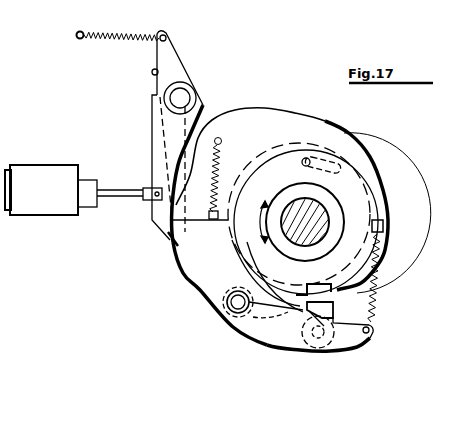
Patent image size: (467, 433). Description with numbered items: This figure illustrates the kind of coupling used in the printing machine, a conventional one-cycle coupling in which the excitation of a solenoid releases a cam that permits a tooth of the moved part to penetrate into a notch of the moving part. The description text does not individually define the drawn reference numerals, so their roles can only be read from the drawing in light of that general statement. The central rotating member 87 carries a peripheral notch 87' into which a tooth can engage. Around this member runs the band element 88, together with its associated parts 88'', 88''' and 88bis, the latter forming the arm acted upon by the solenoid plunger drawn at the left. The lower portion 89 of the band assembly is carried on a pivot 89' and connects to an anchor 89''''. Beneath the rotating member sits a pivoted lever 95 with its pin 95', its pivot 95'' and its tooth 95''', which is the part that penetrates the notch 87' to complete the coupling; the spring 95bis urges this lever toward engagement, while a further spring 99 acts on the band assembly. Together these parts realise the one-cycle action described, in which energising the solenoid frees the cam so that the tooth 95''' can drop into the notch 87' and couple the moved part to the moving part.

The toothed disc 87 is at (311, 217).
The notch of disc 87' is at (317, 277).
The brake band 88 is at (303, 188).
The band end link 88'' is at (181, 189).
The slot 88''' is at (325, 137).
The actuating lever 88bis is at (157, 228).
The lower band portion 89 is at (223, 292).
The pivot 89' is at (233, 322).
The spring anchor 89'''' is at (408, 217).
The pawl lever 95 is at (311, 338).
The pin 95' is at (395, 335).
The pawl pivot 95'' is at (323, 349).
The pawl tooth 95''' is at (350, 335).
The return spring 95bis is at (378, 300).
The spring 99 is at (220, 165).